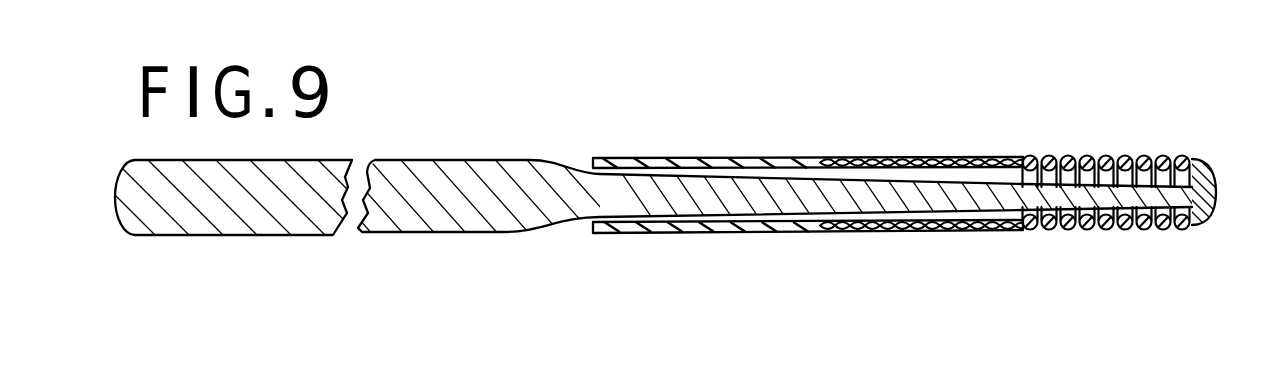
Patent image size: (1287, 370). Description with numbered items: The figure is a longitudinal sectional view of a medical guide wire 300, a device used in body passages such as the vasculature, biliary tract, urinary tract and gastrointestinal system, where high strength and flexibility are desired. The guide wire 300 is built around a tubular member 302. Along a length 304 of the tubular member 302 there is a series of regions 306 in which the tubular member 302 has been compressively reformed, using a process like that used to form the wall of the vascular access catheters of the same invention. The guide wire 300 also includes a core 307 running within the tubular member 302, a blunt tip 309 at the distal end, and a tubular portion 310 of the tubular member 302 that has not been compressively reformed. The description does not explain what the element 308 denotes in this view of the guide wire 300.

The catheter shaft assembly 300 is at (845, 126).
The tubular outer layer 302 is at (738, 233).
The braided section 304 is at (1015, 247).
The braid strands 306 is at (983, 157).
The coil 307 is at (1111, 156).
The inner wall of tube 308 is at (698, 223).
The rounded tip 309 is at (1214, 210).
The outer sheath 310 is at (714, 158).